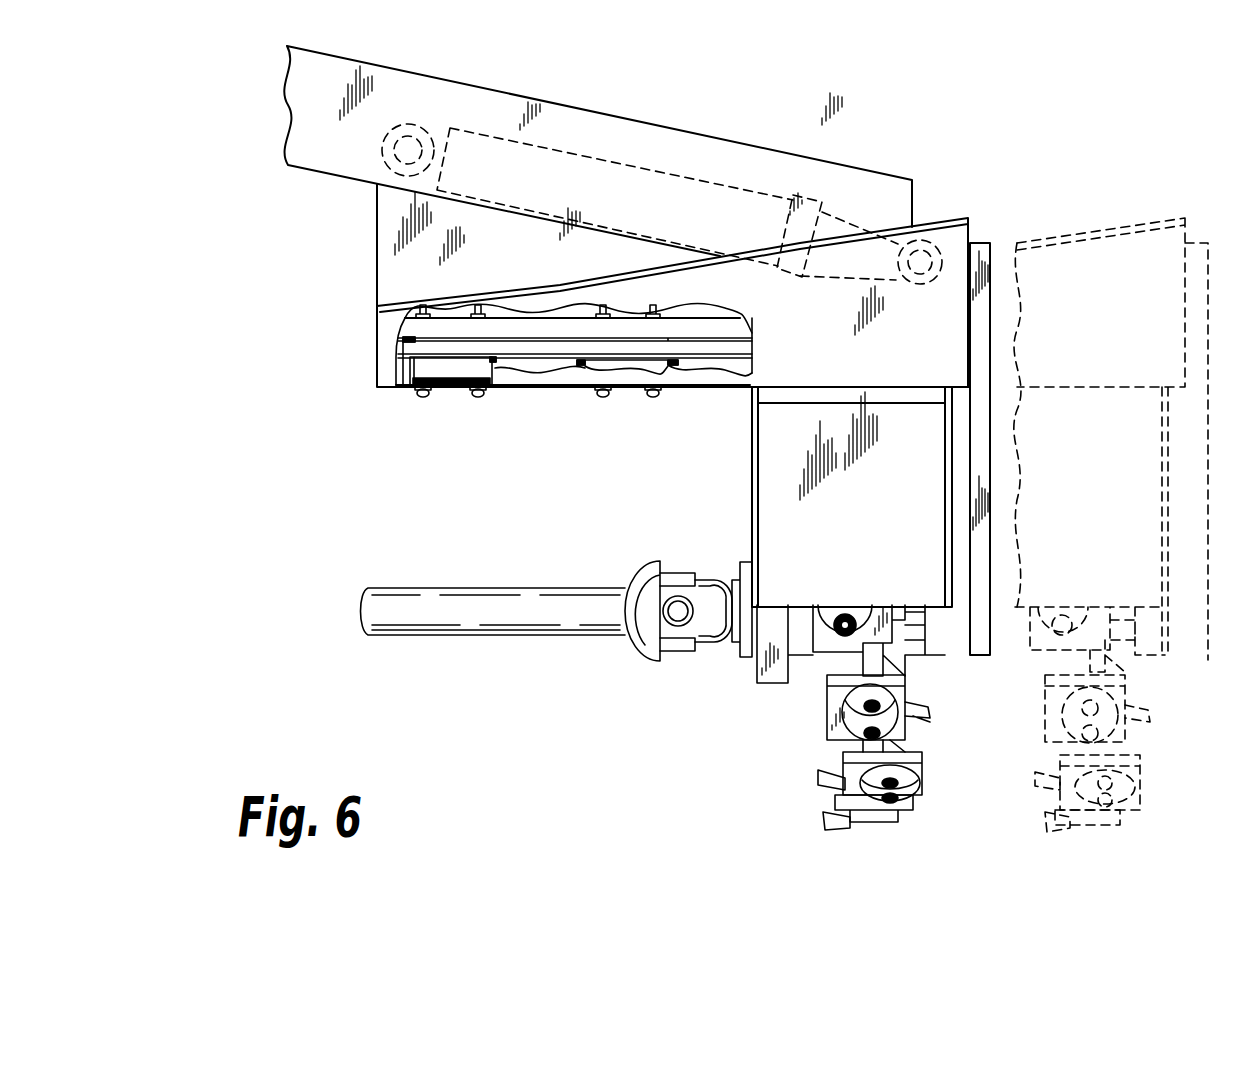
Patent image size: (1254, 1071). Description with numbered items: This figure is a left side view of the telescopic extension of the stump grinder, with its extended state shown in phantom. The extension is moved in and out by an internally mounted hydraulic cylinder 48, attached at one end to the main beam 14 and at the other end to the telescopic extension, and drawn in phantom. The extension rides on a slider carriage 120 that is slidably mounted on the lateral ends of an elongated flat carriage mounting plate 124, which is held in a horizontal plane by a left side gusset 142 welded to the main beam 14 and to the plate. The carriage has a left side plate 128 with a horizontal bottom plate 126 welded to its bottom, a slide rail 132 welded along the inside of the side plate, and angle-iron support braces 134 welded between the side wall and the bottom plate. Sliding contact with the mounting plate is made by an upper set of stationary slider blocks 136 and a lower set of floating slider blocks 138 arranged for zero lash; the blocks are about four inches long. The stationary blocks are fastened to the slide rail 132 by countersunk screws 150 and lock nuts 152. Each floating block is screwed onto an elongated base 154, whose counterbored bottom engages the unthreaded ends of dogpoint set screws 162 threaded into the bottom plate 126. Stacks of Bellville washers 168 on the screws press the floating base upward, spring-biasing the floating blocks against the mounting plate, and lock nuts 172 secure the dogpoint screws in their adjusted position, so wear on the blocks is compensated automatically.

The main beam 14 is at (300, 172).
The hydraulic cylinder 48 is at (590, 152).
The slider carriage 120 is at (228, 353).
The carriage mounting plate 124 is at (415, 349).
The bottom plates 126 is at (410, 386).
The left side plate 128 is at (393, 330).
The slide rail 132 is at (403, 325).
The support braces 134 is at (500, 362).
The upper slider blocks 136 is at (397, 347).
The lower slider blocks 138 is at (497, 362).
The left side gusset 142 is at (377, 242).
The countersunk screws 150 is at (658, 312).
The lock nuts 152 is at (678, 313).
The elongated base 154 is at (497, 377).
The dogpoint set screws 162 is at (423, 395).
The Bellville washers 168 is at (403, 379).
The lock nuts 172 is at (417, 393).